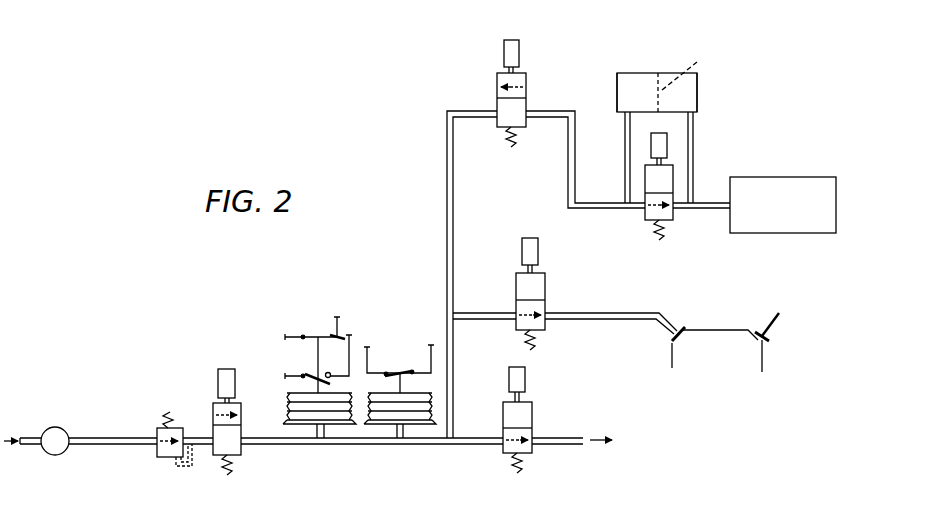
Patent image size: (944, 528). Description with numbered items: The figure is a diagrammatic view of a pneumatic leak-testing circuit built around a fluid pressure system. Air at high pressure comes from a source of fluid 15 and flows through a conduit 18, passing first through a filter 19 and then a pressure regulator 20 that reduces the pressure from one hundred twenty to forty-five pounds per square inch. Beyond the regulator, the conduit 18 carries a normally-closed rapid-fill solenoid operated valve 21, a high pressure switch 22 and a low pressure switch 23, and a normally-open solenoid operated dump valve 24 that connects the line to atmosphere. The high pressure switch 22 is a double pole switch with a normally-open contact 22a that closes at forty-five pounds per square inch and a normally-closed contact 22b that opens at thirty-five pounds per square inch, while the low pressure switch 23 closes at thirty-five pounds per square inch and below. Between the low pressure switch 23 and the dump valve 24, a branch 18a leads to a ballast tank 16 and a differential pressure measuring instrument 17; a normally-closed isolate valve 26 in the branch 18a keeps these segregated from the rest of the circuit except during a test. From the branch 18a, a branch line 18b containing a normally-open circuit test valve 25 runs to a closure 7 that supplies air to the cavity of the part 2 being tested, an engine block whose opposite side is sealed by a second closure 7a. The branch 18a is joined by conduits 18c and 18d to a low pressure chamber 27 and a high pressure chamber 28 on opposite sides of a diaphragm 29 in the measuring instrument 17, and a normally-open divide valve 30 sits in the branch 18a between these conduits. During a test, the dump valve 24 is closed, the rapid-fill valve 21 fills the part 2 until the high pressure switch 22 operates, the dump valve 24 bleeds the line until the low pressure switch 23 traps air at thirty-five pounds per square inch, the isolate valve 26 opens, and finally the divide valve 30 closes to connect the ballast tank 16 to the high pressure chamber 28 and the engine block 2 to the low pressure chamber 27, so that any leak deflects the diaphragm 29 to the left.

The part being tested 2 is at (727, 328).
The closure 7 is at (679, 326).
The closure 7a is at (772, 337).
The source of fluid 15 is at (40, 448).
The ballast tank 16 is at (797, 174).
The differential pressure measuring instrument 17 is at (652, 71).
The conduit 18 is at (107, 439).
The branch conduit 18a is at (447, 250).
The branch line 18b is at (593, 303).
The conduit 18c is at (625, 180).
The conduit 18d is at (693, 173).
The filter 19 is at (66, 449).
The pressure regulator 20 is at (165, 459).
The rapid-fill solenoid operated valve 21 is at (240, 404).
The high pressure switch 22 is at (340, 314).
The normally-open contact 22a is at (310, 377).
The normally-closed contact 22b is at (314, 336).
The low pressure switch 23 is at (404, 372).
The dump valve 24 is at (533, 417).
The circuit test valve 25 is at (516, 284).
The isolate valve 26 is at (527, 97).
The low pressure chamber 27 is at (617, 81).
The high pressure chamber 28 is at (699, 92).
The diaphragm 29 is at (695, 68).
The divide valve 30 is at (645, 213).